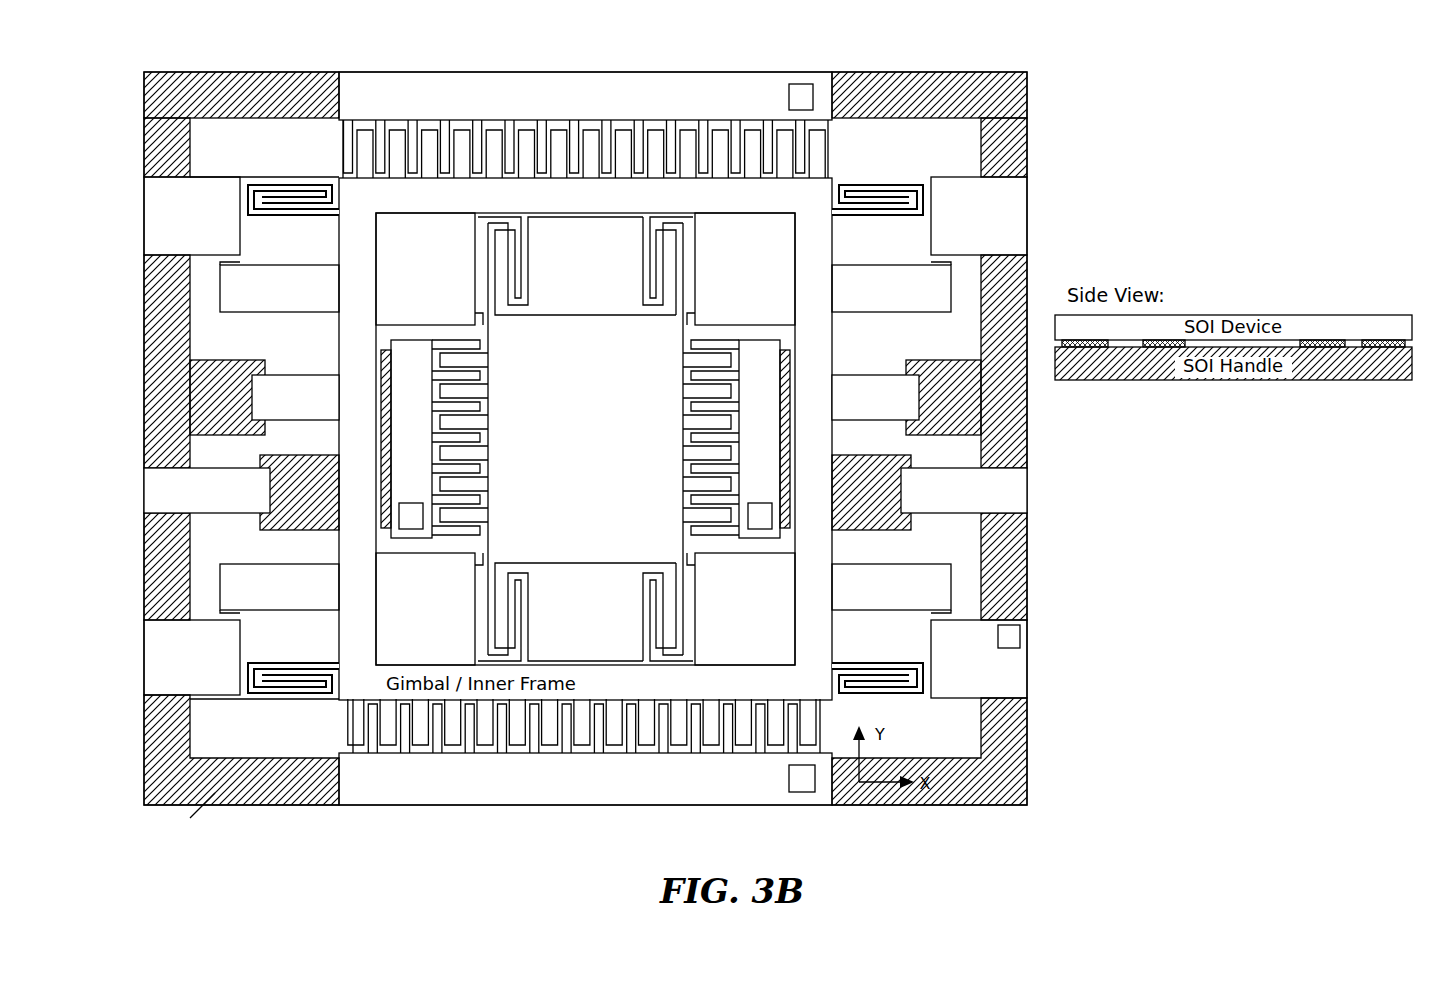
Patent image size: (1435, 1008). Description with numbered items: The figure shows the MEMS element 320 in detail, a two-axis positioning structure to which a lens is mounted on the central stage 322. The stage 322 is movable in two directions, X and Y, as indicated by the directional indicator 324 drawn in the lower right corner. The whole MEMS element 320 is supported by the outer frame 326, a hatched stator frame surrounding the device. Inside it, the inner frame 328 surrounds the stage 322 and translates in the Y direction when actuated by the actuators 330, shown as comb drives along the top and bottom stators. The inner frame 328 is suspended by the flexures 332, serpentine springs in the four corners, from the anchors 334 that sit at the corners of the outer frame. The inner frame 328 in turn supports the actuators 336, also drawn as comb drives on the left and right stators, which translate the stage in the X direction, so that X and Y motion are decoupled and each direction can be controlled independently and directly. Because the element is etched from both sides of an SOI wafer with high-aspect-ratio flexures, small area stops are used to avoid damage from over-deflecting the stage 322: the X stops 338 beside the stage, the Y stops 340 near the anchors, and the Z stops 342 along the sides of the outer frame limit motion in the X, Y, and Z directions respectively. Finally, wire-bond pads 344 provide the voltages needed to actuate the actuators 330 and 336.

The MEMS element 320 is at (983, 46).
The stage 322 is at (567, 473).
The directional indicator 324 is at (970, 790).
The outer frame 326 is at (1005, 151).
The inner frame 328 is at (665, 207).
The actuators 330 is at (372, 145).
The flexures 332 is at (285, 183).
The anchors 334 is at (175, 243).
The actuators 336 is at (487, 388).
The X stops 338 is at (408, 311).
The Y stops 340 is at (220, 292).
The Z stops 342 is at (220, 393).
The wire-bond pads 344 is at (801, 97).